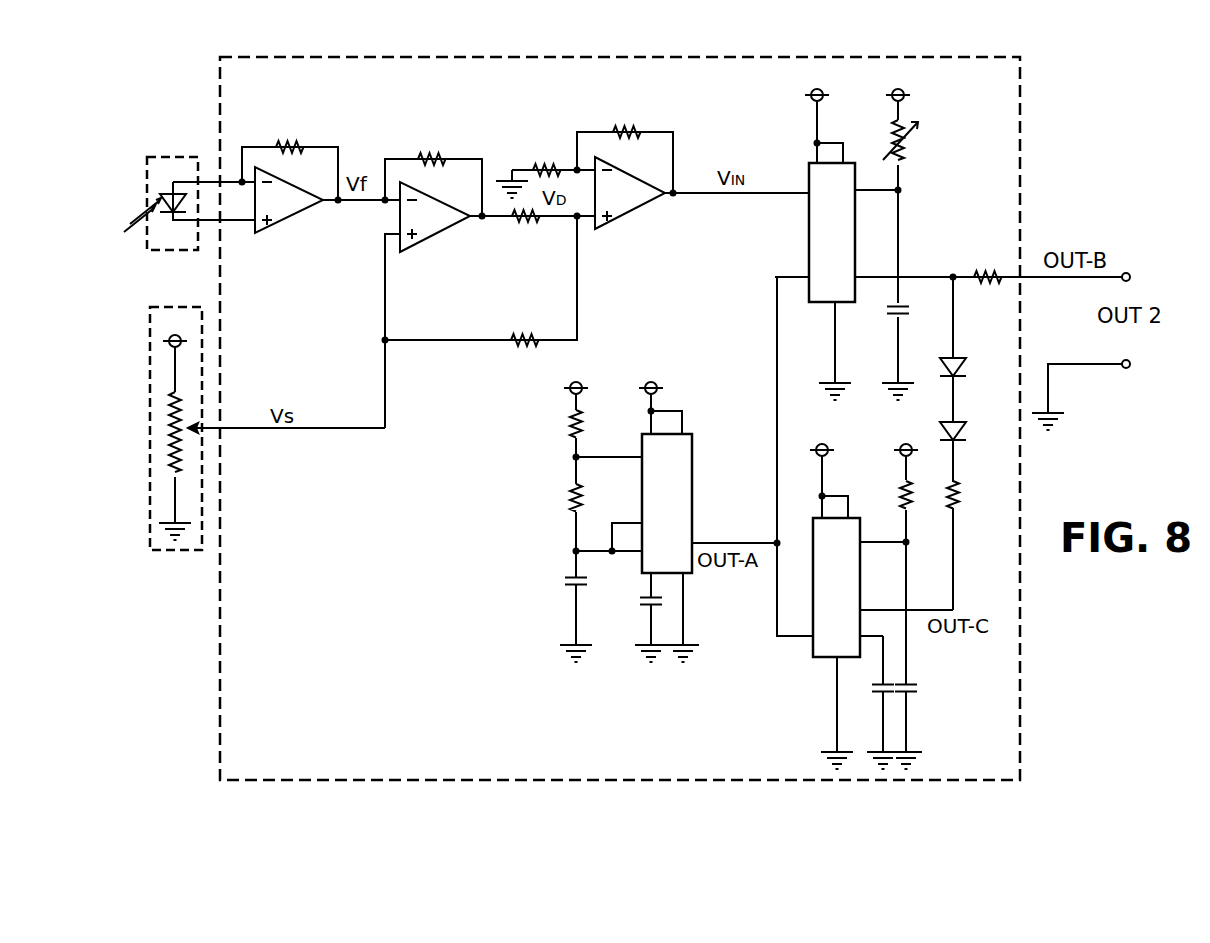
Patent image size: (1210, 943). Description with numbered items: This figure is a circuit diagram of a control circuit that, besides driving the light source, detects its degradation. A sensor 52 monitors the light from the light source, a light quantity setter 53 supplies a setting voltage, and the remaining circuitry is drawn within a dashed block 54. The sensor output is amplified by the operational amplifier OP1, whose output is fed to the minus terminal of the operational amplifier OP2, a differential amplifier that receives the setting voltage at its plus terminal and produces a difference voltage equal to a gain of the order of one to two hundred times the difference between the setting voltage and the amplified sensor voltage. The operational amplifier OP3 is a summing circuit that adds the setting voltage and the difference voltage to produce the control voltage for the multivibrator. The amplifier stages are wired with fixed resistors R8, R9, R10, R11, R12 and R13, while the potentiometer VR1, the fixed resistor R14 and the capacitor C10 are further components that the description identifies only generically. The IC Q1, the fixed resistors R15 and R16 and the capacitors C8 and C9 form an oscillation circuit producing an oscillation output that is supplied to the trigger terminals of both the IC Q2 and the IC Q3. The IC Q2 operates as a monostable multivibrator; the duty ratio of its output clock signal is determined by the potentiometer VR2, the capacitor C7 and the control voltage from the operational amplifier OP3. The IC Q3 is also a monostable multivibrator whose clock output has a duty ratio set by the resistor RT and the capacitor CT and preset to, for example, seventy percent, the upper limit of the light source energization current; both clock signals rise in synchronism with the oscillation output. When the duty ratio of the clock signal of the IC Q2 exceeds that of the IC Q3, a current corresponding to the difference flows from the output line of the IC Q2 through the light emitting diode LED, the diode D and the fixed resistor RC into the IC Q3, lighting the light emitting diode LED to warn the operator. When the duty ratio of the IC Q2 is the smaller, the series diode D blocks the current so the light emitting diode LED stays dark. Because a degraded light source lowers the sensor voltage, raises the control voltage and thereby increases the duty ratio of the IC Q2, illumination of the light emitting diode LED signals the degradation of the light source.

The sensor 52 is at (172, 156).
The light quantity setter 53 is at (170, 306).
The signal processing circuit 54 is at (218, 112).
The operational amplifier OP1 is at (283, 224).
The operational amplifier OP2 is at (437, 240).
The operational amplifier OP3 is at (634, 208).
The fixed resistor R8 is at (288, 140).
The fixed resistor R9 is at (433, 155).
The fixed resistor R10 is at (548, 165).
The fixed resistor R11 is at (516, 224).
The fixed resistor R12 is at (528, 335).
The fixed resistor R13 is at (628, 130).
The fixed resistor R14 is at (988, 272).
The fixed resistor R15 is at (570, 425).
The fixed resistor R16 is at (570, 502).
The fixed resistor RT is at (901, 491).
The fixed resistor RC is at (960, 497).
The potentiometer VR1 is at (170, 432).
The potentiometer VR2 is at (909, 148).
The IC Q1 is at (676, 509).
The IC Q2 is at (864, 232).
The IC Q3 is at (875, 592).
The capacitor C7 is at (906, 311).
The capacitor C8 is at (567, 582).
The capacitor C9 is at (641, 600).
The capacitor C10 is at (871, 688).
The capacitor CT is at (919, 688).
The light emitting diode LED is at (980, 352).
The diode D is at (966, 432).